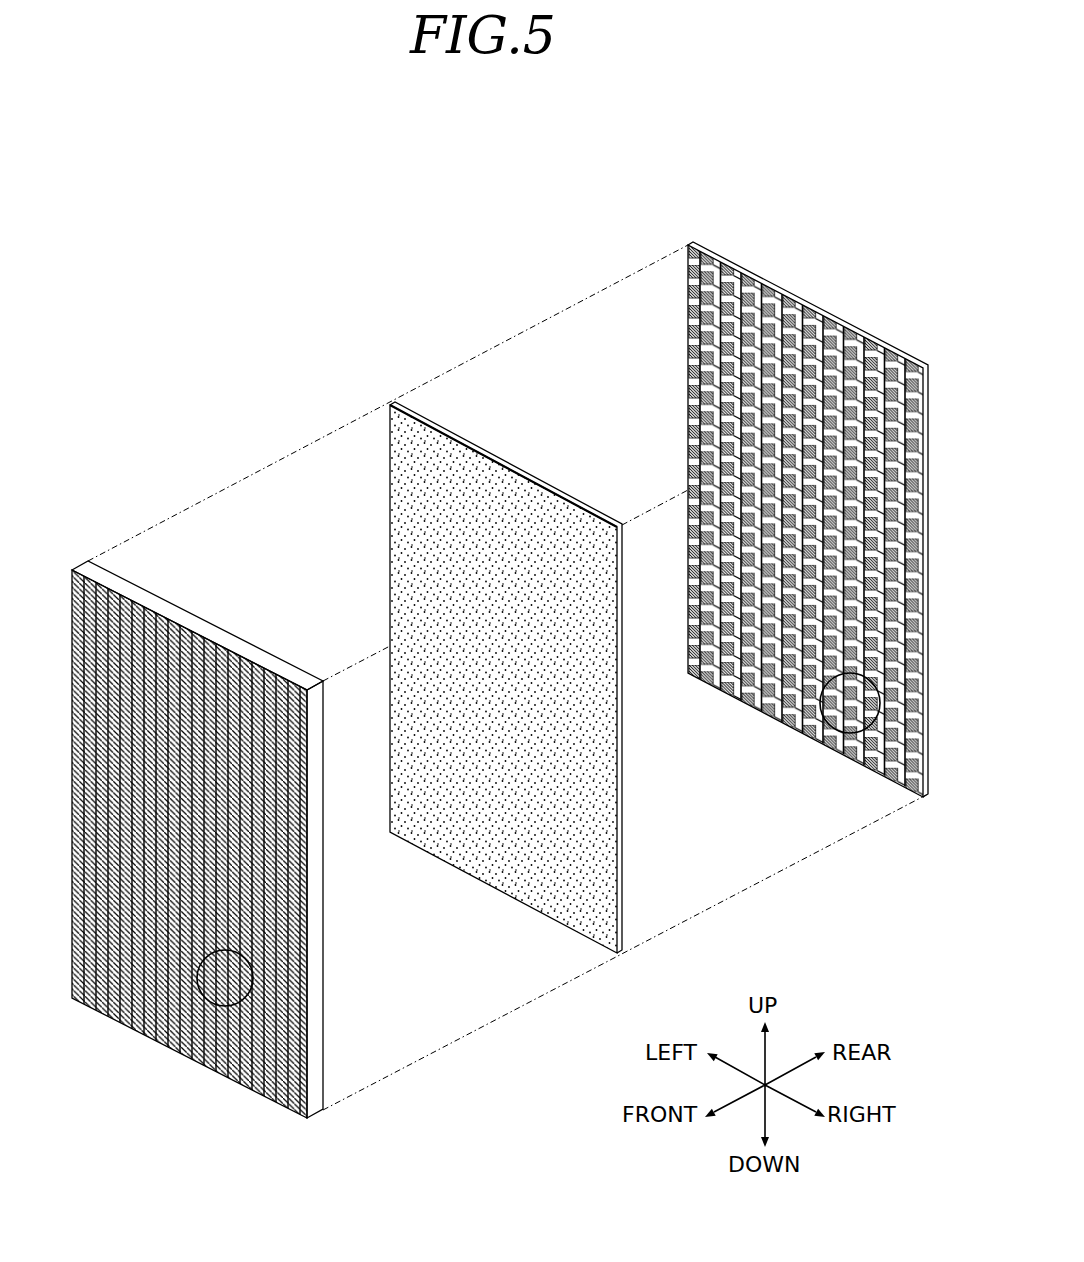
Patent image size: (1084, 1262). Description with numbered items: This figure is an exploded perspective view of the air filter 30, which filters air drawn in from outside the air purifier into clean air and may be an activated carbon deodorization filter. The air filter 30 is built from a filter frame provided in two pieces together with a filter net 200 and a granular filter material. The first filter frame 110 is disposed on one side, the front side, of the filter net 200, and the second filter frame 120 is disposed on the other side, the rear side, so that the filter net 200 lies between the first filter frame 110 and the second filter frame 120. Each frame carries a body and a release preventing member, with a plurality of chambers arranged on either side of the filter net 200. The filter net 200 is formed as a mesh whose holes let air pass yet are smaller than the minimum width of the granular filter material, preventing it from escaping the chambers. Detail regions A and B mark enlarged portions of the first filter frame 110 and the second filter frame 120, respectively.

The air filter 30 is at (417, 303).
The first filter frame 110 is at (124, 555).
The second filter frame 120 is at (772, 262).
The filter net 200 is at (490, 477).
The detail region A is at (252, 988).
The detail region B is at (840, 730).